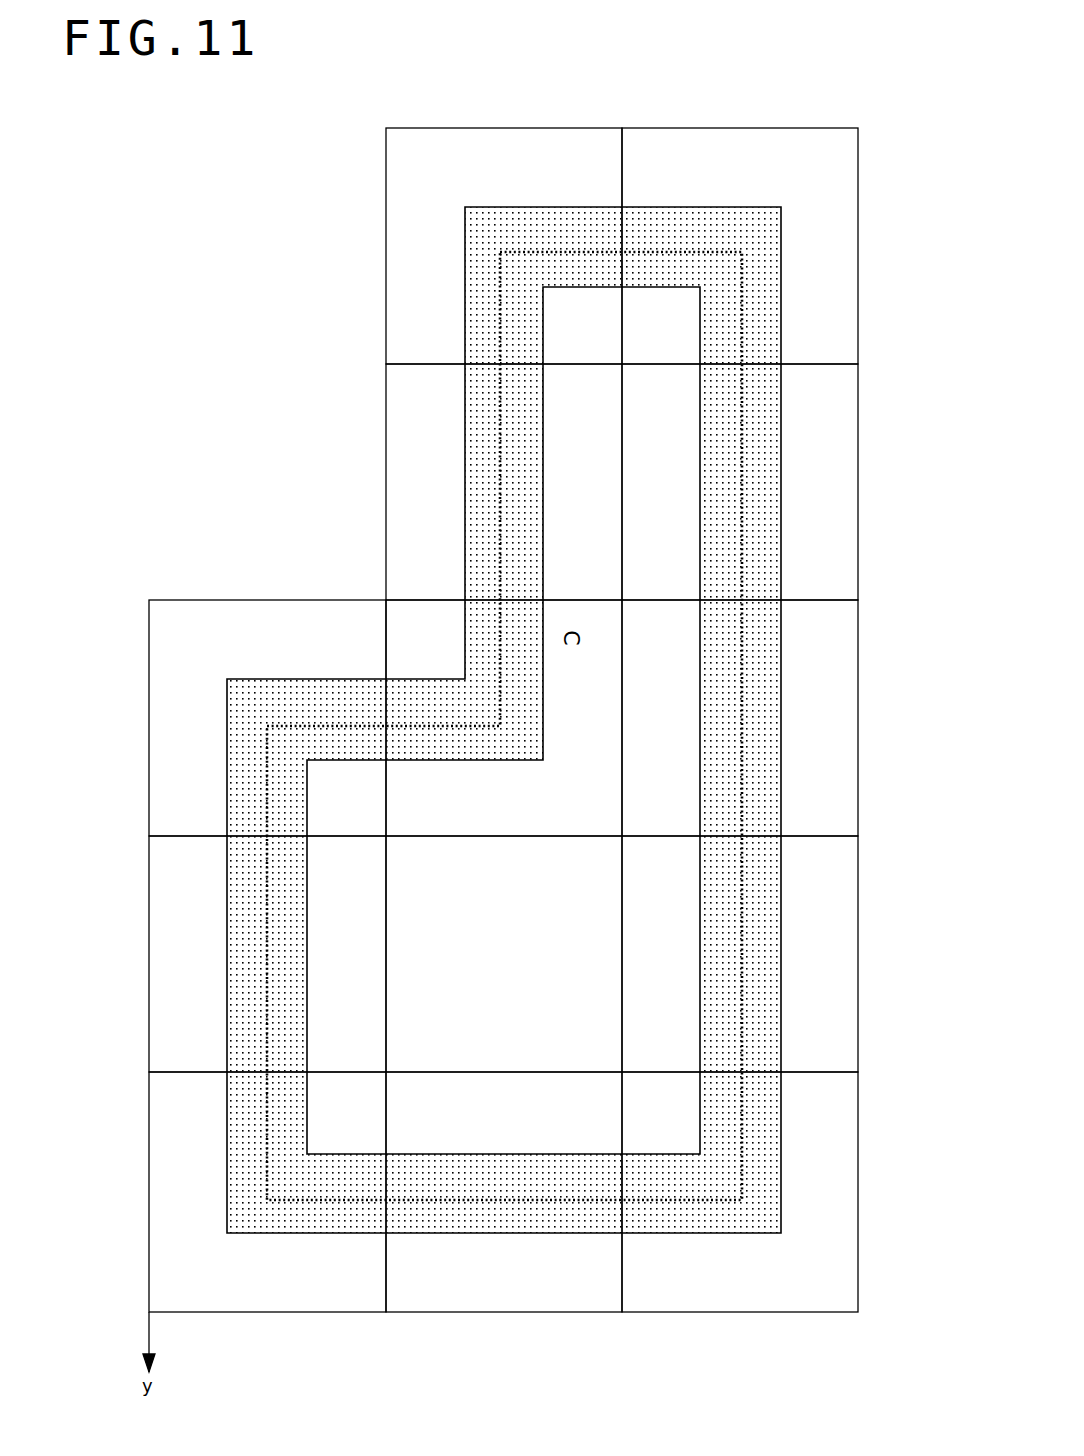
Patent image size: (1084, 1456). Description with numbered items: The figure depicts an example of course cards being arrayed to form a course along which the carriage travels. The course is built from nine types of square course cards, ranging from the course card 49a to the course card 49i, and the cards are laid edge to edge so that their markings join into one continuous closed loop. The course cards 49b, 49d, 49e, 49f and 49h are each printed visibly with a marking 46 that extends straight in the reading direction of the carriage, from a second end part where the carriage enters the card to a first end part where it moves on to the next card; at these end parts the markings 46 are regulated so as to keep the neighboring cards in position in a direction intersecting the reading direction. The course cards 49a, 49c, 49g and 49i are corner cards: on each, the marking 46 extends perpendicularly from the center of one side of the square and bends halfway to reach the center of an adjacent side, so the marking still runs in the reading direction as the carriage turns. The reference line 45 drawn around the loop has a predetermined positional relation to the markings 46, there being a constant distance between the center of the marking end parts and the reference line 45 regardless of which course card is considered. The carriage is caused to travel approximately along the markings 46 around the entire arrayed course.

The reference line 45 is at (748, 280).
The marking 46 is at (476, 258).
The course card 49a is at (221, 612).
The course card 49b is at (158, 936).
The course card 49c is at (535, 822).
The course card 49d is at (385, 456).
The course card 49e is at (849, 718).
The course card 49f is at (849, 472).
The course card 49g is at (437, 140).
The course card 49h is at (509, 1297).
The course card 49i is at (751, 140).